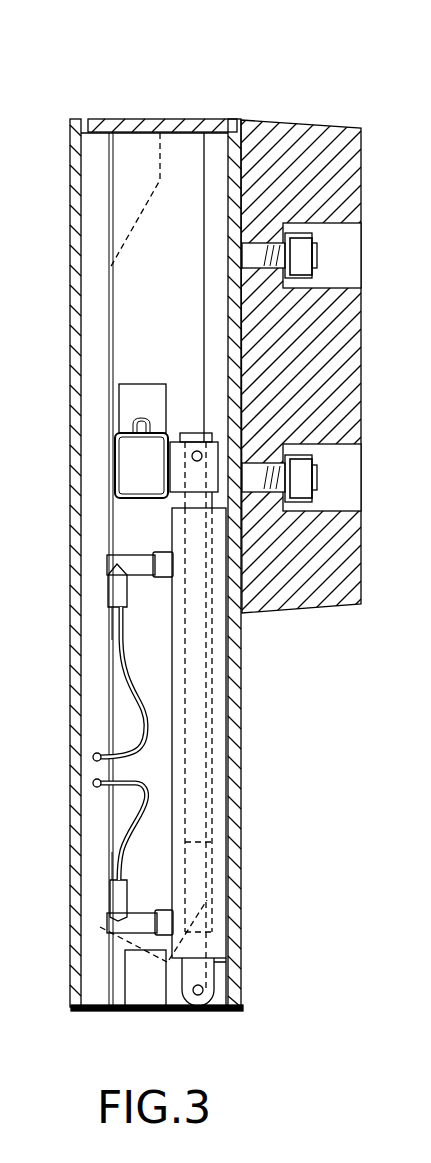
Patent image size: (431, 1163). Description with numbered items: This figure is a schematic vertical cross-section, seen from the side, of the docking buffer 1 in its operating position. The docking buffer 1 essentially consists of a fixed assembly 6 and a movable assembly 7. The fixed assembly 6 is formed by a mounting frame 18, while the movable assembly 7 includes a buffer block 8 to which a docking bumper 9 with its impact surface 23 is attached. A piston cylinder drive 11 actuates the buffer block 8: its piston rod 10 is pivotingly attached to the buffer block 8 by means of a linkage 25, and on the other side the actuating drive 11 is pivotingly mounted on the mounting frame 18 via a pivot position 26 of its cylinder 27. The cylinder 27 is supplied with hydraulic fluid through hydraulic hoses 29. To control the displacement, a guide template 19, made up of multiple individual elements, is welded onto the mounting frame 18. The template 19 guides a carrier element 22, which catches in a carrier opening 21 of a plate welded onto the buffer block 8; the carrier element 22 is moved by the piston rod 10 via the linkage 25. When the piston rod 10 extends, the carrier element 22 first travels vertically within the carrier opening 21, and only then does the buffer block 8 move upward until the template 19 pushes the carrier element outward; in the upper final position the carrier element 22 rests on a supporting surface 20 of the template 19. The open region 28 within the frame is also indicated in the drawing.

The docking buffer 1 is at (305, 65).
The fixed assembly 6 is at (101, 147).
The movable assembly 7 is at (188, 148).
The buffer block 8 is at (236, 737).
The docking bumper 9 is at (350, 347).
The piston rod 10 is at (193, 498).
The piston cylinder drive 11 is at (213, 813).
The mounting frame 18 is at (97, 1002).
The guide template 19 is at (146, 147).
The supporting surface 20 is at (116, 460).
The carrier opening 21 is at (146, 398).
The carrier element 22 is at (140, 478).
The impact surface 23 is at (362, 196).
The linkage 25 is at (165, 468).
The pivot position 26 is at (204, 990).
The cylinder 27 is at (218, 686).
The interior space 28 is at (160, 252).
The hydraulic hoses 29 is at (130, 700).